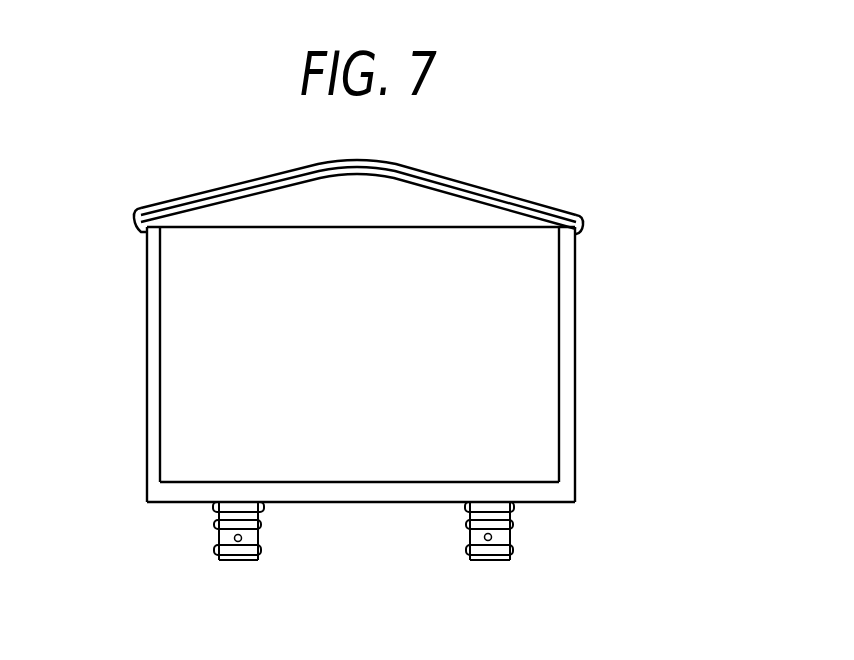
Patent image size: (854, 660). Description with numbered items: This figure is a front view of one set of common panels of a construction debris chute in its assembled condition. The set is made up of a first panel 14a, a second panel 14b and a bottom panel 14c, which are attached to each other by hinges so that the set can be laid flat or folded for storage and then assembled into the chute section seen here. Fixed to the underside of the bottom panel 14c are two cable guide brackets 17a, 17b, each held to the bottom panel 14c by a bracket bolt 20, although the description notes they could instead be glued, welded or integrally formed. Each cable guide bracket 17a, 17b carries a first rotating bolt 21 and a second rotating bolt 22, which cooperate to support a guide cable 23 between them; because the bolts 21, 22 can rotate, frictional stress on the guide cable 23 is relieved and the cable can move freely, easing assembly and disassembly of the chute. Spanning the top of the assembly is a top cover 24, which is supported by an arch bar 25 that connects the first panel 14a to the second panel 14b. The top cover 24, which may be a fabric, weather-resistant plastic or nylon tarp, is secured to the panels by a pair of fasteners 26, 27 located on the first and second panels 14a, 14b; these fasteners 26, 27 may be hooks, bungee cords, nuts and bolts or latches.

The first panel 14a is at (576, 333).
The second panel 14b is at (147, 345).
The bottom panel 14c is at (540, 503).
The cable guide bracket 17a is at (487, 560).
The cable guide bracket 17b is at (242, 562).
The bracket bolt 20 is at (213, 508).
The first rotating bolt 21 is at (260, 526).
The second rotating bolt 22 is at (215, 552).
The guide cable 23 is at (218, 540).
The top cover 24 is at (437, 172).
The arch bar 25 is at (488, 197).
The fastener 26 is at (141, 243).
The fastener 27 is at (578, 237).